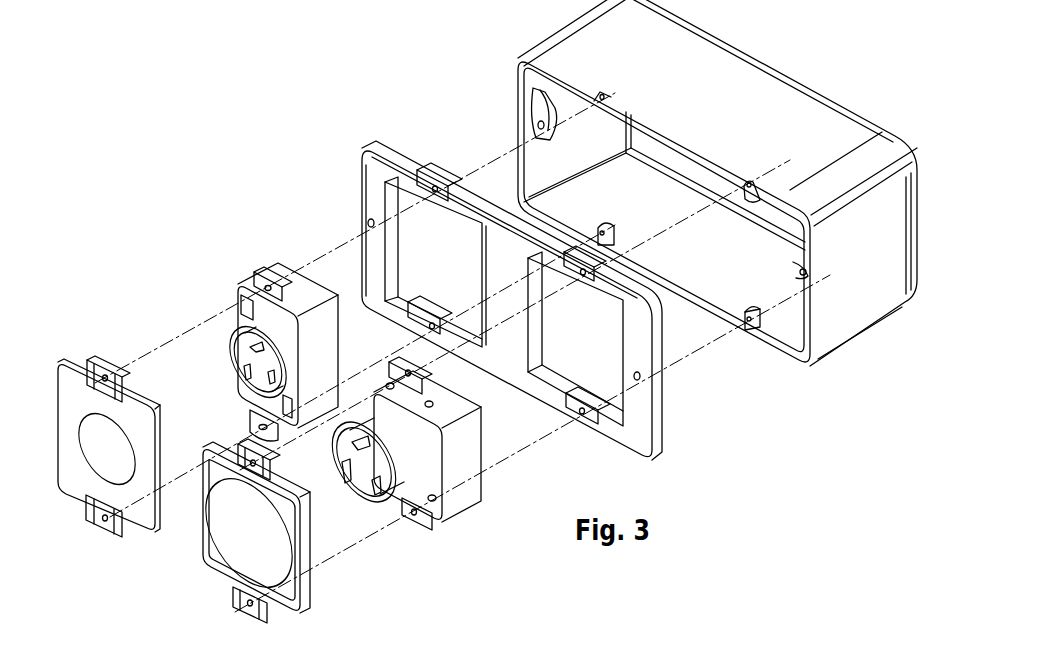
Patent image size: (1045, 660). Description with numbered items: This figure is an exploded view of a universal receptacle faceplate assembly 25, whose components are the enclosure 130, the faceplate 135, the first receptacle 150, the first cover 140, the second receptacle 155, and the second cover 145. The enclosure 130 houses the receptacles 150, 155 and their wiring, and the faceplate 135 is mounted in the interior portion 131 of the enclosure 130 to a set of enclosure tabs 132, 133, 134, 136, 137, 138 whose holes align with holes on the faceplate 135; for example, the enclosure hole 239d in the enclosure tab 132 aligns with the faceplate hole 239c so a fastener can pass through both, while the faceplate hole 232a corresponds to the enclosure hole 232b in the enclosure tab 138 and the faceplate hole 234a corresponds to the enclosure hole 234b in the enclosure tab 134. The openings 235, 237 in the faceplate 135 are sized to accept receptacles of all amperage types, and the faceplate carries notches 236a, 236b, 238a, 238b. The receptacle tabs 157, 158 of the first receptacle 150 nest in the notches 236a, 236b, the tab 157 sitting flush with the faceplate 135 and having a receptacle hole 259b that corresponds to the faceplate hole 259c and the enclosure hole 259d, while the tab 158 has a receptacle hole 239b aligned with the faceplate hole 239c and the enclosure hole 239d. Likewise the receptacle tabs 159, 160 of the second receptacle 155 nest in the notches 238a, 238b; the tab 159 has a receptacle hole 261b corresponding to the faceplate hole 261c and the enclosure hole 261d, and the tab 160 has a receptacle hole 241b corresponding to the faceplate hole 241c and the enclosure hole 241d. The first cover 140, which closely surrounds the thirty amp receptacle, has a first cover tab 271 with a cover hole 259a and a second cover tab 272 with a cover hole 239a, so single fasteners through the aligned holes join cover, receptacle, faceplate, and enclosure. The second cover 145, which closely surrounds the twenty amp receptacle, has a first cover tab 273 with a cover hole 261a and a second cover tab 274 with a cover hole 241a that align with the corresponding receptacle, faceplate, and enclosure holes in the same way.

The universal receptacle faceplate assembly 25 is at (430, 80).
The enclosure 130 is at (691, 186).
The interior portion 131 is at (714, 246).
The enclosure tab 132 is at (763, 340).
The enclosure tab 133 is at (622, 217).
The enclosure tab 134 is at (526, 111).
The faceplate 135 is at (498, 292).
The enclosure tab 136 is at (629, 107).
The enclosure tab 137 is at (783, 184).
The enclosure tab 138 is at (769, 261).
The first cover 140 is at (263, 533).
The second cover 145 is at (116, 453).
The first receptacle 150 is at (426, 460).
The second receptacle 155 is at (264, 334).
The receptacle tab 157 is at (448, 389).
The receptacle tab 158 is at (425, 535).
The receptacle tab 159 is at (264, 281).
The receptacle tab 160 is at (237, 413).
The faceplate hole 232a is at (640, 378).
The enclosure hole 232b is at (800, 272).
The faceplate hole 234a is at (367, 222).
The enclosure hole 234b is at (560, 100).
The opening 235 is at (545, 328).
The faceplate notch 236a is at (622, 287).
The faceplate notch 236b is at (585, 412).
The opening 237 is at (392, 262).
The faceplate notch 238a is at (469, 169).
The faceplate notch 238b is at (420, 310).
The cover hole 239a is at (213, 614).
The receptacle hole 239b is at (413, 540).
The faceplate hole 239c is at (584, 416).
The enclosure hole 239d is at (748, 325).
The cover hole 241a is at (80, 537).
The receptacle hole 241b is at (258, 427).
The faceplate hole 241c is at (398, 334).
The enclosure hole 241d is at (600, 232).
The cover hole 259a is at (258, 462).
The receptacle hole 259b is at (408, 380).
The faceplate hole 259c is at (592, 267).
The enclosure hole 259d is at (752, 182).
The cover hole 261a is at (108, 374).
The receptacle hole 261b is at (262, 289).
The faceplate hole 261c is at (458, 190).
The enclosure hole 261d is at (606, 97).
The first cover tab 271 is at (284, 463).
The second cover tab 272 is at (220, 605).
The first cover tab 273 is at (104, 365).
The second cover tab 274 is at (87, 537).